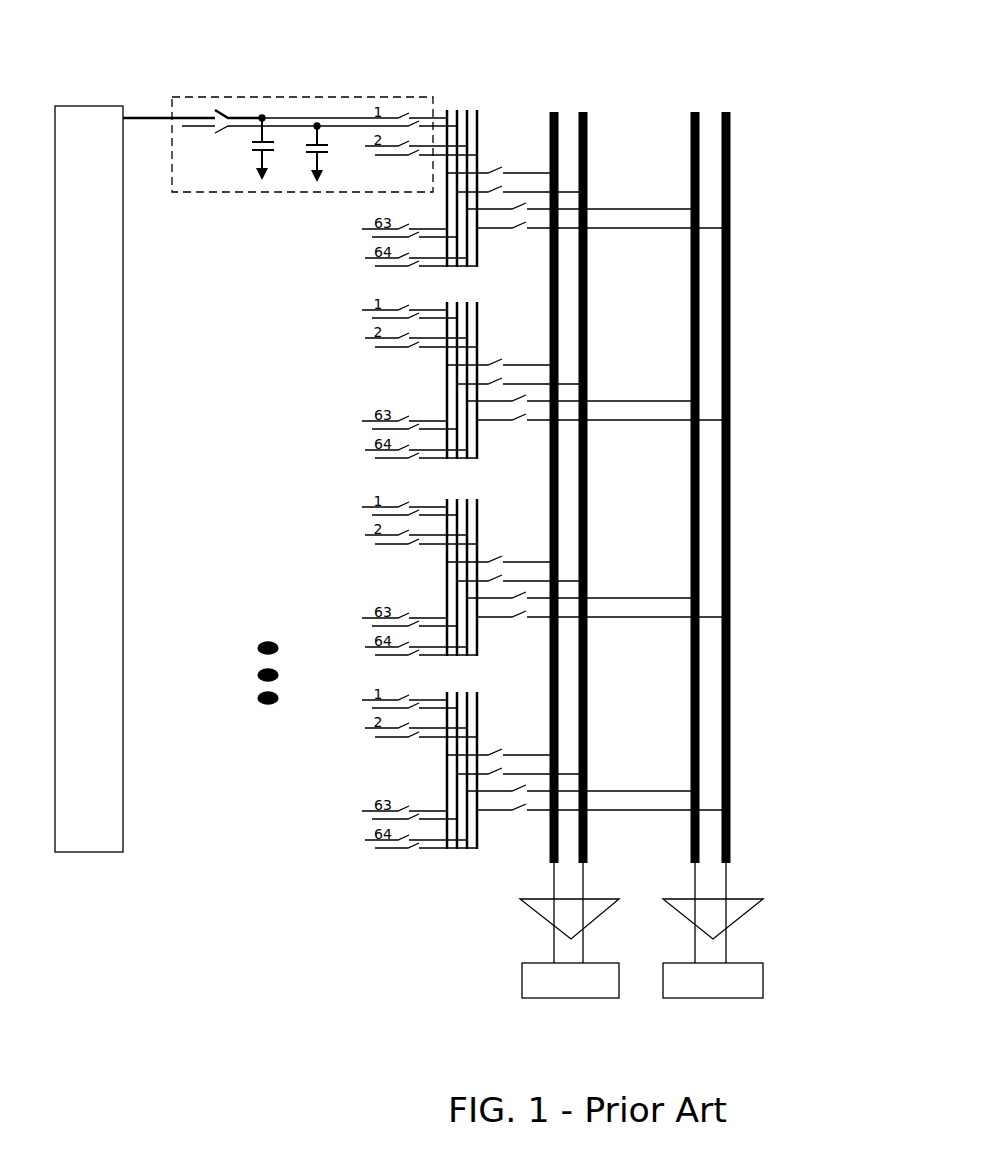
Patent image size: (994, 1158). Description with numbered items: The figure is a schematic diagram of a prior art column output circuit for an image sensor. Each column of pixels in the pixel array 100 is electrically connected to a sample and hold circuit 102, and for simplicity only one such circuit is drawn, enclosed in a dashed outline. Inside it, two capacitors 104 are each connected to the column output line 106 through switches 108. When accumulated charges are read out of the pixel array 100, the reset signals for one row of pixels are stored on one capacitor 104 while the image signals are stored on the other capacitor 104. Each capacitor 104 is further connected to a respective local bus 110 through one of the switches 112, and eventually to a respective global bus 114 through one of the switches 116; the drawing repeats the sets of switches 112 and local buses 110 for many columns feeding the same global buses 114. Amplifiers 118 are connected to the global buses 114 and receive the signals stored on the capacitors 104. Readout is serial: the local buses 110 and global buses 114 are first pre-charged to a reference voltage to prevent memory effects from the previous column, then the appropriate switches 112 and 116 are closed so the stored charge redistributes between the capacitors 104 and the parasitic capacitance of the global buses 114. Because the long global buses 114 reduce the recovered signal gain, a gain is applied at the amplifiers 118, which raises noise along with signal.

The pixel array 100 is at (73, 446).
The sample and hold circuit 102 is at (340, 97).
The capacitors 104 is at (238, 156).
The column output line 106 is at (137, 118).
The switches 108 is at (206, 112).
The local bus 110 is at (480, 97).
The switches 112 is at (400, 103).
The global bus 114 is at (588, 97).
The switches 116 is at (505, 243).
The amplifiers 118 is at (552, 907).